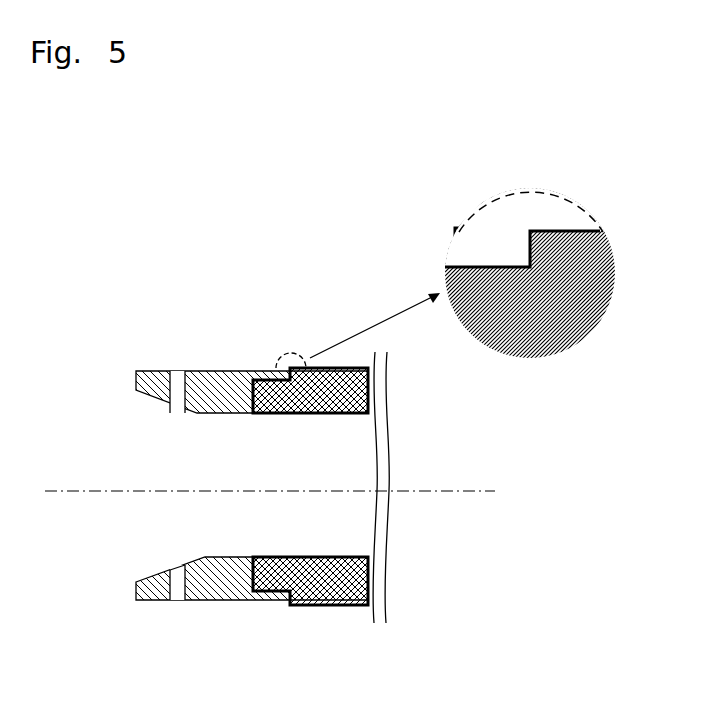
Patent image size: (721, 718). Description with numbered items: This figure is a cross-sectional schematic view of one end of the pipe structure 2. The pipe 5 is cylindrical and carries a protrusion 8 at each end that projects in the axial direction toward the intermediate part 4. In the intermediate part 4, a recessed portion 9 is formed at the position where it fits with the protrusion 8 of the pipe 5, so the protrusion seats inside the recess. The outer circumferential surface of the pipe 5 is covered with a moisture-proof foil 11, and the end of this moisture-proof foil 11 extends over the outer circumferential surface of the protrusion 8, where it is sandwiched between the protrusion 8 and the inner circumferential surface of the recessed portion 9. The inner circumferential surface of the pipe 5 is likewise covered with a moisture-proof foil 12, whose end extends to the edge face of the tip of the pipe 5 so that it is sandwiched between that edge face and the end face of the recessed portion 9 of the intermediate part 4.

The pipe structure 2 is at (305, 429).
The intermediate part 4 is at (190, 411).
The pipe 5 is at (380, 390).
The protrusion 8 is at (283, 415).
The recessed portion 9 is at (265, 370).
The moisture-proof foil 11 is at (337, 663).
The moisture-proof foil 12 is at (313, 556).